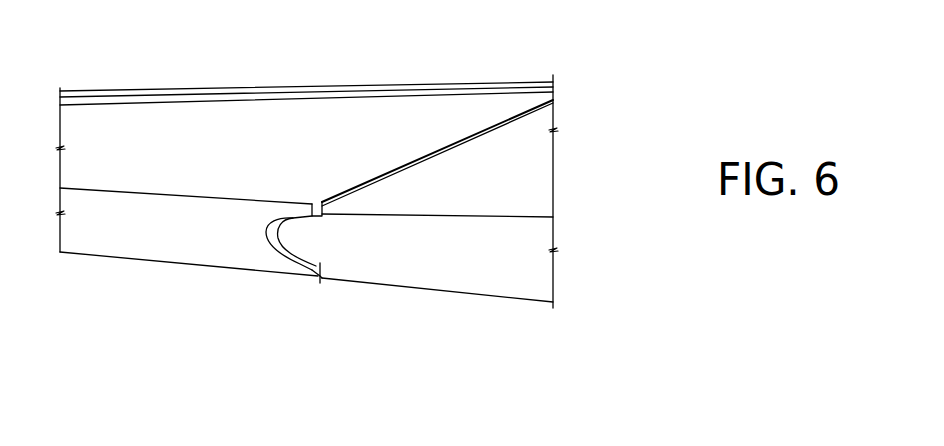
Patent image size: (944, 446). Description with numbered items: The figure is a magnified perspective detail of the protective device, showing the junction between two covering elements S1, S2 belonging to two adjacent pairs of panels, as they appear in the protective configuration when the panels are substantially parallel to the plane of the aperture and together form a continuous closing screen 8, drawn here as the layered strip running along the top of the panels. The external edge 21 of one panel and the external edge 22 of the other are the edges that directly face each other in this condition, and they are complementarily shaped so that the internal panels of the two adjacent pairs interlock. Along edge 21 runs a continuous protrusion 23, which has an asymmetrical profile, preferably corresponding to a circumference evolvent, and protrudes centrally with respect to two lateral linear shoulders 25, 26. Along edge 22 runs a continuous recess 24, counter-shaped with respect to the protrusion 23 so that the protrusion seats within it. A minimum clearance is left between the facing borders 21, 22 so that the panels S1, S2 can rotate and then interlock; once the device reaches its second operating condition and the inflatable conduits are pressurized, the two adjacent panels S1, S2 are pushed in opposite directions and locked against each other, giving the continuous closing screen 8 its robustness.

The continuous closing screen 8 is at (374, 75).
The external edge 21 is at (318, 300).
The external edge 22 is at (297, 206).
The continuous protrusion 23 is at (313, 238).
The continuous recess 24 is at (270, 241).
The lateral linear shoulder 25 is at (327, 268).
The lateral linear shoulder 26 is at (373, 208).
The covering element S1 is at (470, 277).
The covering element S2 is at (128, 233).